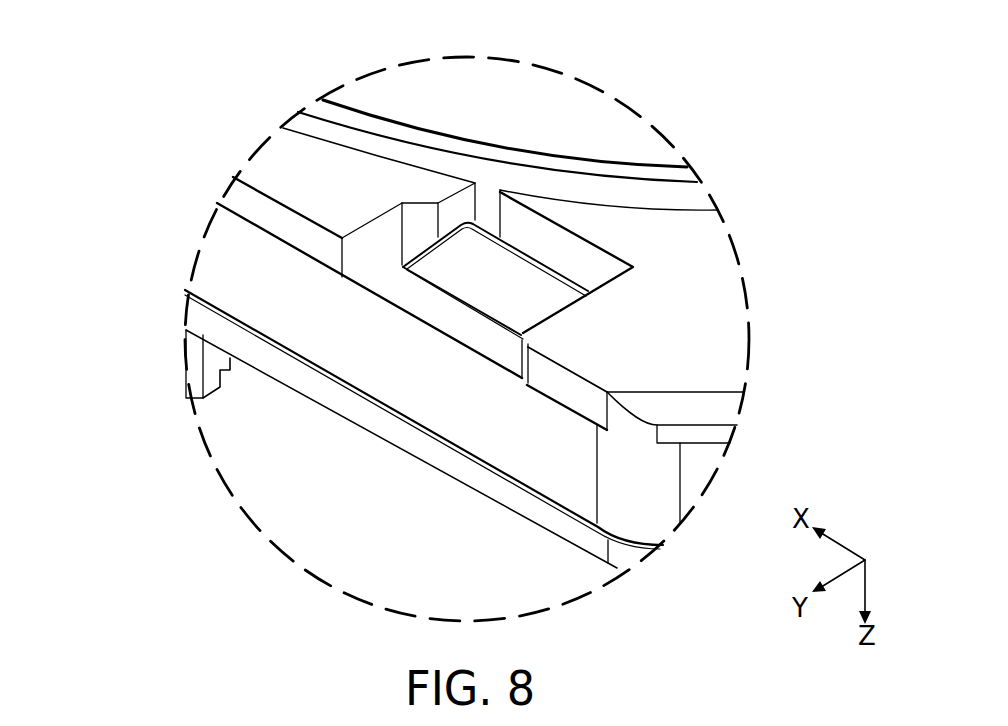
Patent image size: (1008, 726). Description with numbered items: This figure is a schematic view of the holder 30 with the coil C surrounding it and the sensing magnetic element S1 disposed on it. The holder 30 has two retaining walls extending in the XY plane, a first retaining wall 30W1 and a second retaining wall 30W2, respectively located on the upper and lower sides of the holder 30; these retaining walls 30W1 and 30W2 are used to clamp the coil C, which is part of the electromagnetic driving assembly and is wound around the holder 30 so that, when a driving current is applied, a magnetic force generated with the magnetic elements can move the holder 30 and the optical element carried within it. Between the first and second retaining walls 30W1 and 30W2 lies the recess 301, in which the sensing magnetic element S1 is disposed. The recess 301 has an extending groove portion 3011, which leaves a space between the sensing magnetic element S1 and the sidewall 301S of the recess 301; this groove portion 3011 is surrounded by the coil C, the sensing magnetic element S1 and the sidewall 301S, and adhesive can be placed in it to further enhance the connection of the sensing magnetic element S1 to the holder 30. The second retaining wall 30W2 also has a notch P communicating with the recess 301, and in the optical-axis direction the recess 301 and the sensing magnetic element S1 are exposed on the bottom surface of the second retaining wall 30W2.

The holder 30 is at (722, 283).
The recess 301 is at (547, 246).
The groove portion 3011 is at (415, 225).
The sidewall 301S is at (593, 277).
The sensing magnetic element S1 is at (520, 277).
The notch P is at (371, 250).
The coil C is at (368, 372).
The first retaining wall 30W1 is at (193, 312).
The second retaining wall 30W2 is at (232, 192).